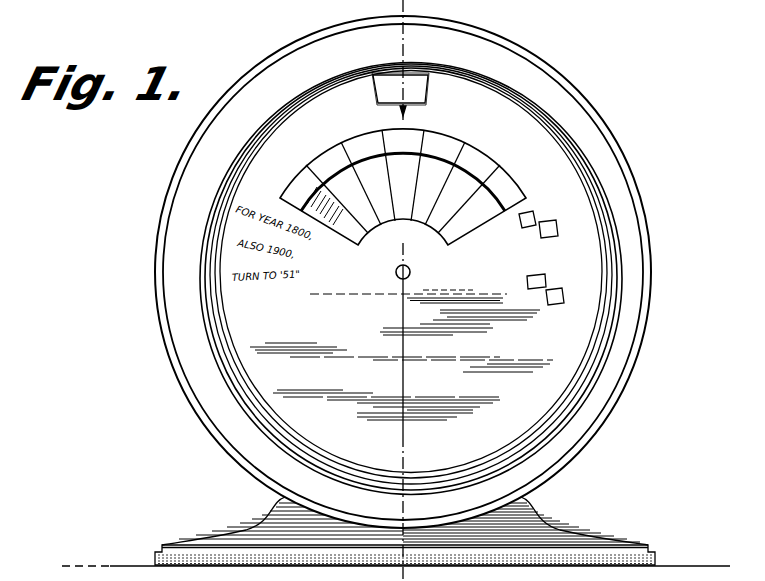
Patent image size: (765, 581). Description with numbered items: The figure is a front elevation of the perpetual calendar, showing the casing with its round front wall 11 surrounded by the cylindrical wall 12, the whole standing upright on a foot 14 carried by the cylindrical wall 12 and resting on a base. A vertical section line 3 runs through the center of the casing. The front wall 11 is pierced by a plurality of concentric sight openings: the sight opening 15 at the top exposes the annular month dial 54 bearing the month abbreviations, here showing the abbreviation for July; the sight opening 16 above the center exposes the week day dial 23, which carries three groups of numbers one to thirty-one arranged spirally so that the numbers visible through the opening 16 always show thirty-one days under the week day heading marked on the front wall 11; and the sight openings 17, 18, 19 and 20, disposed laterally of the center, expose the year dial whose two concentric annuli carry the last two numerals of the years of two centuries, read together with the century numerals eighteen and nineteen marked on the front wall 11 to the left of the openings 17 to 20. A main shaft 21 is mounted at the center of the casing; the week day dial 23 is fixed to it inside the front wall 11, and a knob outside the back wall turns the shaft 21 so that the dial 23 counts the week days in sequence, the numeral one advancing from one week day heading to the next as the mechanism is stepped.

The section line 3- 3 is at (412, 13).
The front wall 11 is at (317, 108).
The cylindrical wall 12 is at (488, 163).
The foot 14 is at (577, 538).
The sight opening 15 is at (429, 87).
The sight opening 16 is at (462, 146).
The sight opening 17 is at (534, 217).
The sight opening 18 is at (558, 228).
The sight opening 19 is at (547, 280).
The sight opening 20 is at (563, 297).
The main shaft 21 is at (397, 284).
The week day dial 23 is at (495, 212).
The month dial 54 is at (423, 78).